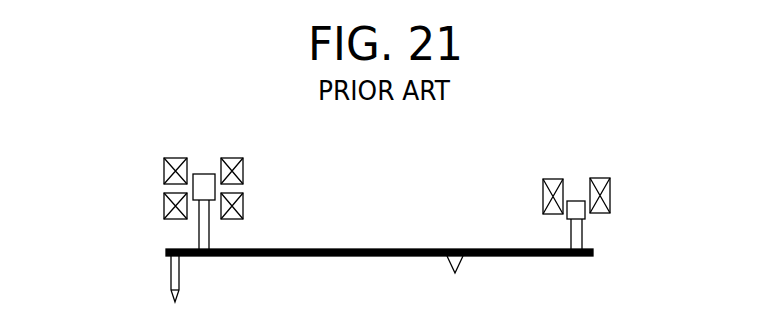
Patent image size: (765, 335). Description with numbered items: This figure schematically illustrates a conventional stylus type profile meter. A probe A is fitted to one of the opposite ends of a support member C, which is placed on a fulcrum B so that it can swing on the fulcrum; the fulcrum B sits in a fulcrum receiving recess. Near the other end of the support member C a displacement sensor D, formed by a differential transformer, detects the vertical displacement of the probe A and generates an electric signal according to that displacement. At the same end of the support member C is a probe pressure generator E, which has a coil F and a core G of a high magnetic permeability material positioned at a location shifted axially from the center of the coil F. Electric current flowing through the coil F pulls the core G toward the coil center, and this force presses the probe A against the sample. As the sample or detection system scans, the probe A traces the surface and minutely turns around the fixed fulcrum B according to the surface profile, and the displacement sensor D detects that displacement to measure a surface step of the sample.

The probe A is at (171, 270).
The fulcrum B is at (448, 262).
The support member C is at (341, 249).
The displacement sensor D is at (257, 186).
The probe pressure generator E is at (571, 182).
The coil F is at (610, 188).
The core G is at (585, 215).